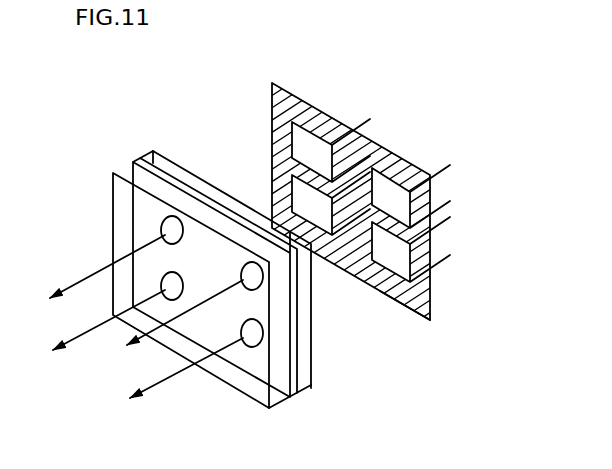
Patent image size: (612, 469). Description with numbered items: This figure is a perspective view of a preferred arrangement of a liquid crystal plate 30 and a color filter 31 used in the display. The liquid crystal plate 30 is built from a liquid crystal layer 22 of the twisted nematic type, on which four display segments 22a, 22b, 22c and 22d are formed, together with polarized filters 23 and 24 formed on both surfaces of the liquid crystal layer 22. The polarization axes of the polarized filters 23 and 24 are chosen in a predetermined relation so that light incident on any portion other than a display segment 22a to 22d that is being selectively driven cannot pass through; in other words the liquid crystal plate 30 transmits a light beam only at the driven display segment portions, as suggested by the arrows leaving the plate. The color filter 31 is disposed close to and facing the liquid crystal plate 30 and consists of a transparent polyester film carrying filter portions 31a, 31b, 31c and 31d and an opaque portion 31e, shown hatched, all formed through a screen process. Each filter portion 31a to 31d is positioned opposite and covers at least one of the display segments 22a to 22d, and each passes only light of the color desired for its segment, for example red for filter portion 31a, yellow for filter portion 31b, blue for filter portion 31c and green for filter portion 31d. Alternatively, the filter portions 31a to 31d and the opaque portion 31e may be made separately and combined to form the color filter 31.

The liquid crystal plate 30 is at (152, 142).
The liquid crystal layer 22 is at (297, 395).
The display segment 22a is at (172, 230).
The display segment 22b is at (172, 286).
The display segment 22c is at (252, 276).
The display segment 22d is at (252, 333).
The polarized filter 23 is at (311, 350).
The polarized filter 24 is at (222, 383).
The color filter 31 is at (430, 285).
The filter portion 31a is at (295, 137).
The filter portion 31b is at (294, 192).
The filter portion 31c is at (404, 203).
The filter portion 31d is at (400, 282).
The opaque portion 31e is at (417, 300).